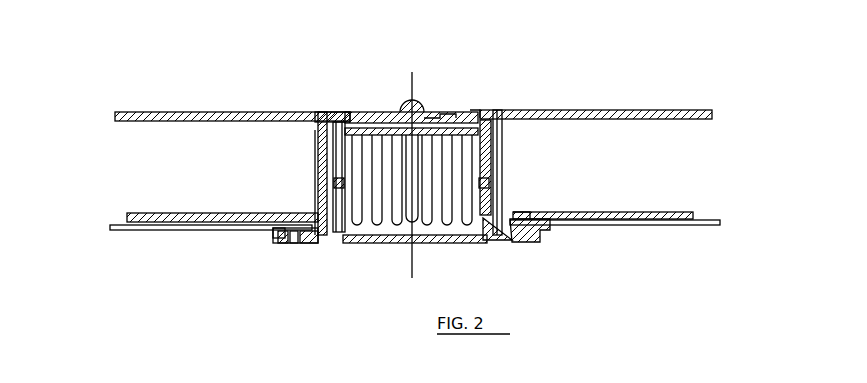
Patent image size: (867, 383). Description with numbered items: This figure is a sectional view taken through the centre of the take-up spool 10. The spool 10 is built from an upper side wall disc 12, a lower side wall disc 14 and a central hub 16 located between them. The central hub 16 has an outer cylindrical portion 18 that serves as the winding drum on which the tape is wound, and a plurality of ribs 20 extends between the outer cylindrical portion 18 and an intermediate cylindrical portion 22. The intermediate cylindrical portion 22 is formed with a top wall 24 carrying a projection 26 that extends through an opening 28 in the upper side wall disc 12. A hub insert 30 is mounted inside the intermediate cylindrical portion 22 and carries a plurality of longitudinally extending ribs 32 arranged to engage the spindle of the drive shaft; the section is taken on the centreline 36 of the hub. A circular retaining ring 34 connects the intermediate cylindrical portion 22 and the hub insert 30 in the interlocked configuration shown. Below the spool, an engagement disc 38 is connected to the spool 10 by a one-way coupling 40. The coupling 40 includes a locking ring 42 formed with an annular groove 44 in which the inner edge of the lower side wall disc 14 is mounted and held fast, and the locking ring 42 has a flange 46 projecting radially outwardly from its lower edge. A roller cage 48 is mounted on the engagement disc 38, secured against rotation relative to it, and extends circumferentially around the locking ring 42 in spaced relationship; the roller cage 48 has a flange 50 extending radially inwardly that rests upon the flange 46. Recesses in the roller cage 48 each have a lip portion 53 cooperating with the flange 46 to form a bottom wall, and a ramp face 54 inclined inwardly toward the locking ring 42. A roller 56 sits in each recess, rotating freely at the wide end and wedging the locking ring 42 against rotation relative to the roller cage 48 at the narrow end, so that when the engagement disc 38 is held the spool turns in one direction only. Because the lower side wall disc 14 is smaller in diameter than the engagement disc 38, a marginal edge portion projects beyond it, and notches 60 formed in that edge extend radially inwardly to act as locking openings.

The take-up spool 10 is at (218, 88).
The upper side wall disc 12 is at (155, 112).
The lower side wall disc 14 is at (157, 212).
The central hub 16 is at (312, 165).
The outer cylindrical portion 18 is at (322, 112).
The ribs 20 is at (331, 160).
The intermediate cylindrical portion 22 is at (336, 120).
The top wall 24 is at (368, 116).
The projection 26 is at (429, 117).
The opening 28 is at (445, 118).
The hub insert 30 is at (420, 226).
The longitudinally extending ribs 32 is at (460, 228).
The circular retaining ring 34 is at (504, 180).
The centerline / boss 36 is at (411, 74).
The engagement disc 38 is at (151, 232).
The one-way coupling 40 is at (265, 258).
The locking ring 42 is at (500, 243).
The annular groove 44 is at (348, 245).
The flange 46 is at (521, 243).
The roller cage 48 is at (283, 245).
The flange 50 is at (531, 214).
The lip portion 53 is at (295, 245).
The ramp face 54 is at (280, 235).
The roller 56 is at (310, 245).
The notches 60 is at (114, 232).